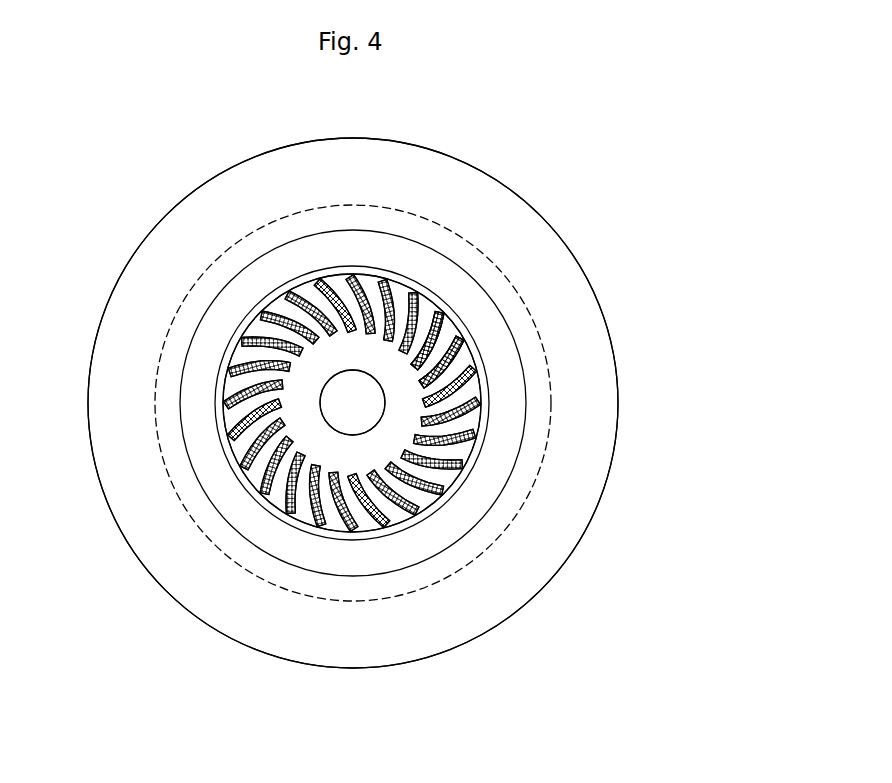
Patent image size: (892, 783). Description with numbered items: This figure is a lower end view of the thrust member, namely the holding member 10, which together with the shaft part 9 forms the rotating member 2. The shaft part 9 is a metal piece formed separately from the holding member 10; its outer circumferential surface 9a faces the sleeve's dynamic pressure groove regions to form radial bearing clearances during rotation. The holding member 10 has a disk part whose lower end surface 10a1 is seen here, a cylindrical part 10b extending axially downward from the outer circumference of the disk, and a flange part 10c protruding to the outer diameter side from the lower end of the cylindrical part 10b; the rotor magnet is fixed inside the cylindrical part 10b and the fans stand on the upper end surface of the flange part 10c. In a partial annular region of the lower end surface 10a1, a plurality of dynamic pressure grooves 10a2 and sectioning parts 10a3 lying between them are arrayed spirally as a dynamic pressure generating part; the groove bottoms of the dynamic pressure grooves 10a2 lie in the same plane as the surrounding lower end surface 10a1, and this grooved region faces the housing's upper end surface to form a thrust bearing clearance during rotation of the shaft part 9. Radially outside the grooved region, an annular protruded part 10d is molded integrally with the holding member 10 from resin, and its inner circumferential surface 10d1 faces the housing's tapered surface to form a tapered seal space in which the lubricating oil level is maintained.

The rotating member 2 is at (621, 248).
The shaft part 9 is at (348, 417).
The outer circumferential surface 9a is at (317, 407).
The holding member 10 is at (604, 305).
The lower end surface 10a1 is at (348, 347).
The dynamic pressure grooves 10a2 is at (422, 312).
The sectioning parts 10a3 is at (448, 334).
The cylindrical part 10b is at (215, 282).
The flange part 10c is at (593, 373).
The protruded part 10d is at (430, 508).
The inner circumferential surface 10d1 is at (387, 512).